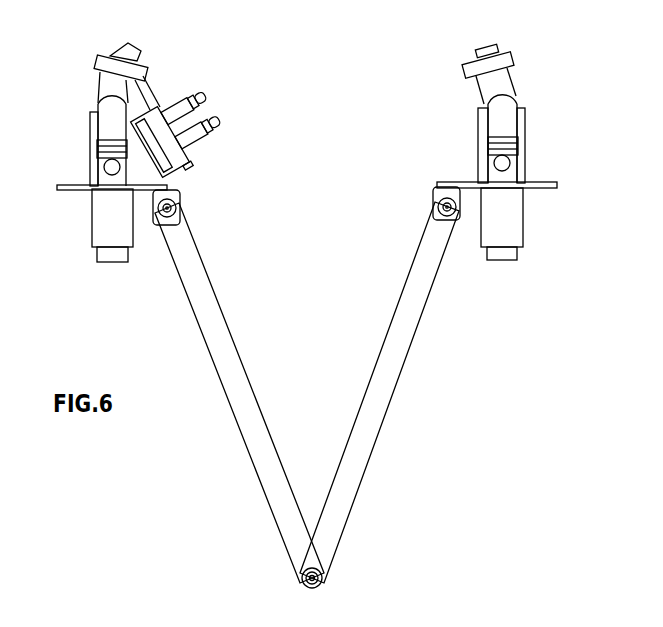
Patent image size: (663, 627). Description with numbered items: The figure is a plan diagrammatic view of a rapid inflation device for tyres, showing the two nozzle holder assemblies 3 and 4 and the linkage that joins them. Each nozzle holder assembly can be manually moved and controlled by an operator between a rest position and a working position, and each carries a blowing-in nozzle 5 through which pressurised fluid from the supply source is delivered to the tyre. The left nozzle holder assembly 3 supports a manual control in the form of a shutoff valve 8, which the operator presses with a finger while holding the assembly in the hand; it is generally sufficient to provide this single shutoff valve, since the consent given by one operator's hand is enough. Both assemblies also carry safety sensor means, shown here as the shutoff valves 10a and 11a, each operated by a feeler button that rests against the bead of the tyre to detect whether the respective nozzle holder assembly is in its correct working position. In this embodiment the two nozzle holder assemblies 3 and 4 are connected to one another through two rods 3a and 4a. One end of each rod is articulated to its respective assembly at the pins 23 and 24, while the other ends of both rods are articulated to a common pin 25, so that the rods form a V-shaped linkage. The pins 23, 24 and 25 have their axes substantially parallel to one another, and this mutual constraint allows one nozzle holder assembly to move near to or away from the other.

The nozzle holder assembly 3 is at (110, 123).
The nozzle holder assembly 4 is at (510, 113).
The rod 3a is at (225, 350).
The rod 4a is at (398, 317).
The blowing-in nozzle 5 is at (138, 52).
The shutoff valve 8 is at (187, 160).
The shutoff valve 10a is at (97, 60).
The shutoff valve 11a is at (510, 58).
The pin 23 is at (176, 207).
The pin 24 is at (446, 185).
The common pin 25 is at (330, 567).